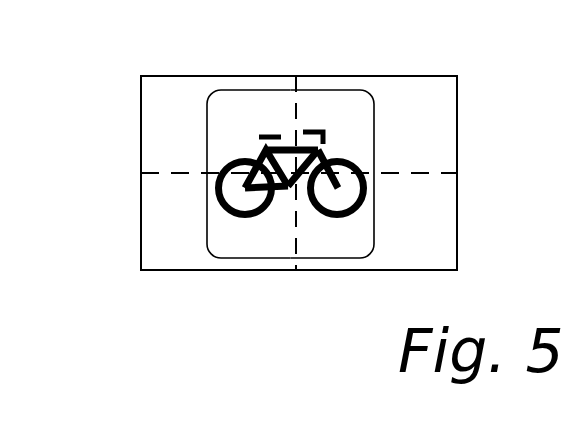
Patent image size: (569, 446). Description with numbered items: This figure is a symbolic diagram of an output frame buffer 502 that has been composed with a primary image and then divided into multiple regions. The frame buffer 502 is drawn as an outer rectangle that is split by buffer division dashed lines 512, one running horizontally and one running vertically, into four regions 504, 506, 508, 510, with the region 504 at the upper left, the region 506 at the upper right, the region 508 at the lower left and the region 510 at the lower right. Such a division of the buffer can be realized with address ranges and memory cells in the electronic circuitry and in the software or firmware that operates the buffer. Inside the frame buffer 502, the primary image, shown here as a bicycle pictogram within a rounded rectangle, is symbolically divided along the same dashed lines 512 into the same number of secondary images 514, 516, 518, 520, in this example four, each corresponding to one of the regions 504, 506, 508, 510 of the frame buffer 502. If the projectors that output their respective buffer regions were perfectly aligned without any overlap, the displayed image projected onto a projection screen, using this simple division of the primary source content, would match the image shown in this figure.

The frame buffer 502 is at (291, 160).
The region 504 is at (178, 93).
The region 506 is at (383, 103).
The region 508 is at (173, 257).
The region 510 is at (423, 252).
The buffer division dashed lines 512 is at (182, 173).
The secondary image 514 is at (269, 114).
The secondary image 516 is at (320, 103).
The secondary image 518 is at (272, 238).
The secondary image 520 is at (327, 238).